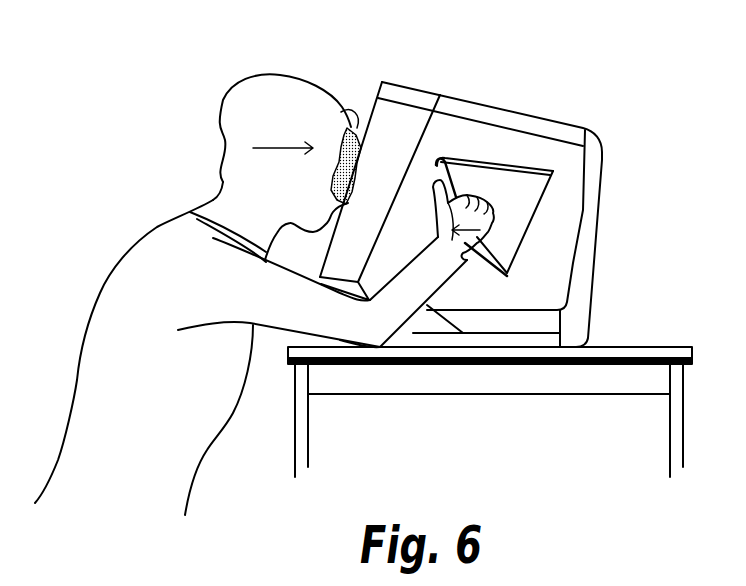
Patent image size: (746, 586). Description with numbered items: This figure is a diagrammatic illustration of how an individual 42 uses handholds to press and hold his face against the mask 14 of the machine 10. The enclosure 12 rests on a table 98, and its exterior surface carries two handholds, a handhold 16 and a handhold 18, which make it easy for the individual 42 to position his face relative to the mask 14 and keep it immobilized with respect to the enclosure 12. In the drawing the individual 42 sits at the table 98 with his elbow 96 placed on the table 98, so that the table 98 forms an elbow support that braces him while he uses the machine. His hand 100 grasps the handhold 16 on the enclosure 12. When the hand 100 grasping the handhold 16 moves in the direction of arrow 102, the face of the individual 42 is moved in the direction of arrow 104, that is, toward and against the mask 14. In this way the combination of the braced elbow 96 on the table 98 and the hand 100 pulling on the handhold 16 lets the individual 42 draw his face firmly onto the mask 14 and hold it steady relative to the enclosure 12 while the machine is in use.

The visual testing device 10 is at (520, 195).
The enclosure 12 is at (605, 180).
The mask 14 is at (343, 133).
The handhold 16 is at (500, 250).
The handhold 18 is at (475, 160).
The individual 42 is at (265, 88).
The elbow 96 is at (430, 440).
The table 98 is at (650, 346).
The hand 100 is at (483, 215).
The arrow 102 is at (470, 263).
The arrow 104 is at (283, 153).